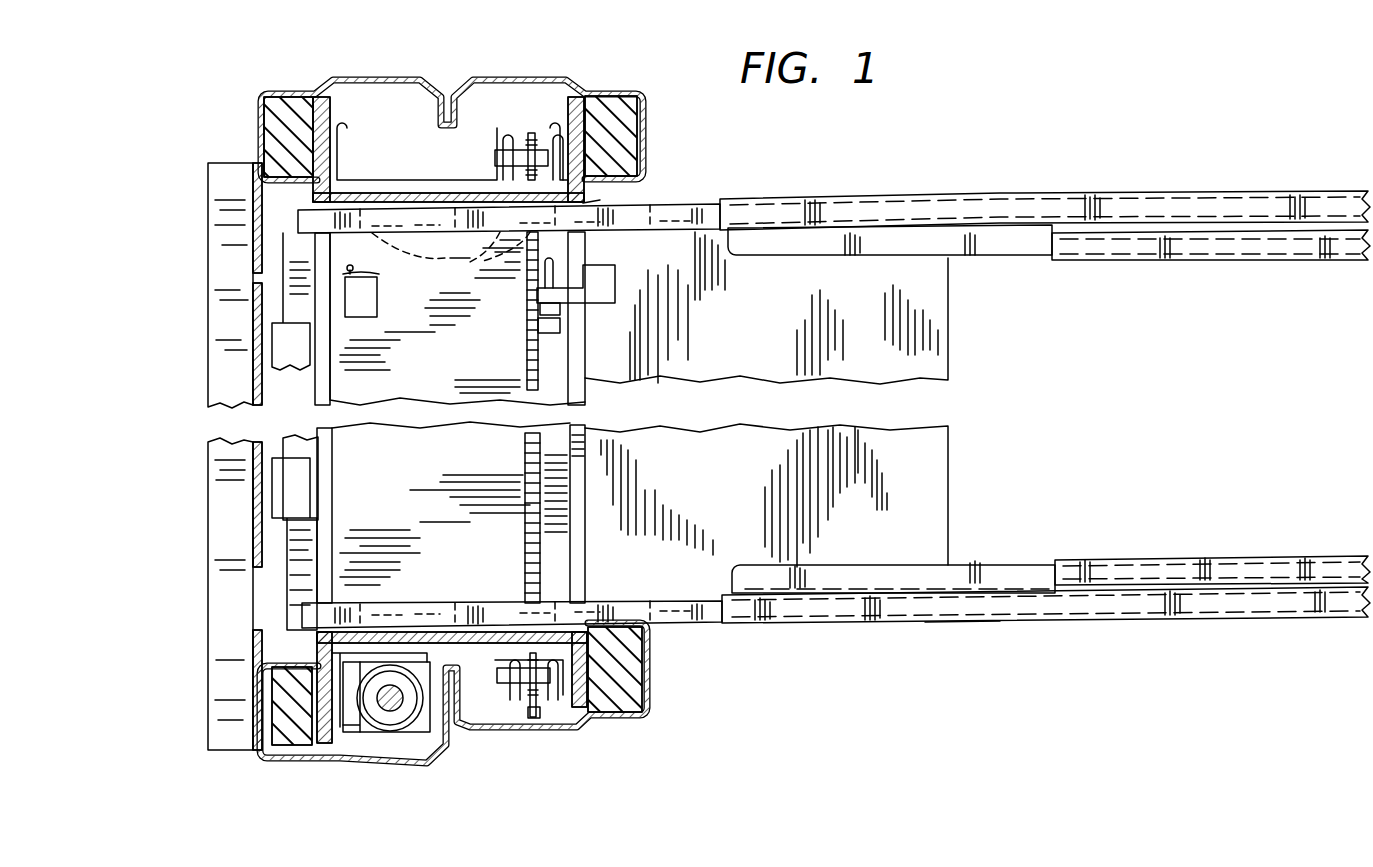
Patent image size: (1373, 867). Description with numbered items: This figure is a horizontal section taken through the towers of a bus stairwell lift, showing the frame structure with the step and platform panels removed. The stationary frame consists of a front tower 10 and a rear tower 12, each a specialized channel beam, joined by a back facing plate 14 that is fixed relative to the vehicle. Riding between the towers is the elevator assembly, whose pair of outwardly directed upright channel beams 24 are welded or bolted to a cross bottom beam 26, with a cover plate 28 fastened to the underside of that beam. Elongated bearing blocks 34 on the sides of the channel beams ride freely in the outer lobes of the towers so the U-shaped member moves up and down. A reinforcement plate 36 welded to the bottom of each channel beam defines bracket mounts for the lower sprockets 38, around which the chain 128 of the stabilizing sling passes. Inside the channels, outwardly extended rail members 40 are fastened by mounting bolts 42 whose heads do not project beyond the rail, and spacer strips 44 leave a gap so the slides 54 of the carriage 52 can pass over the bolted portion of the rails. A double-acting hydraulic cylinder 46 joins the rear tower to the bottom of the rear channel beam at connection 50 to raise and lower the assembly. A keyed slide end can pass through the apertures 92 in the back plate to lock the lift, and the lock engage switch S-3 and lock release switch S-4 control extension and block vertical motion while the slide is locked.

The front tower 10 is at (590, 93).
The rear tower 12 is at (640, 716).
The back facing plate 14 is at (253, 320).
The upright channel beams 24 is at (372, 196).
The cross bottom beam 26 is at (462, 369).
The cover plate 28 is at (755, 485).
The elongated bearing blocks 34 is at (290, 98).
The reinforcement plate 36 is at (450, 180).
The lower sprockets 38 is at (531, 133).
The rail members 40 is at (660, 232).
The mounting bolts 42 is at (451, 251).
The spacer strips 44 is at (583, 204).
The double-acting hydraulic cylinder 46 is at (420, 732).
The cylinder connection to rear channel beam 50 is at (370, 735).
The carriage 52 is at (925, 624).
The slides 54 is at (848, 200).
The apertures 92 is at (253, 236).
The chain 128 is at (525, 540).
The lock engage switch S-3 is at (542, 275).
The lock release switch S-4 is at (388, 291).